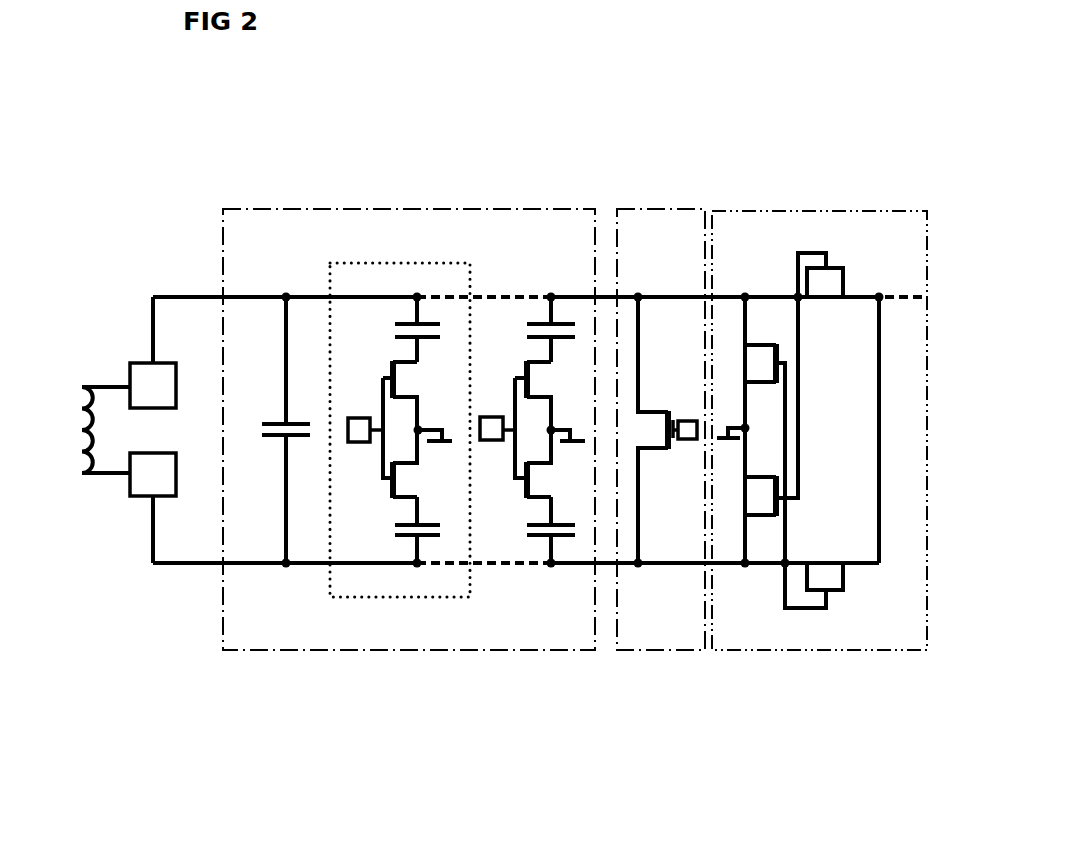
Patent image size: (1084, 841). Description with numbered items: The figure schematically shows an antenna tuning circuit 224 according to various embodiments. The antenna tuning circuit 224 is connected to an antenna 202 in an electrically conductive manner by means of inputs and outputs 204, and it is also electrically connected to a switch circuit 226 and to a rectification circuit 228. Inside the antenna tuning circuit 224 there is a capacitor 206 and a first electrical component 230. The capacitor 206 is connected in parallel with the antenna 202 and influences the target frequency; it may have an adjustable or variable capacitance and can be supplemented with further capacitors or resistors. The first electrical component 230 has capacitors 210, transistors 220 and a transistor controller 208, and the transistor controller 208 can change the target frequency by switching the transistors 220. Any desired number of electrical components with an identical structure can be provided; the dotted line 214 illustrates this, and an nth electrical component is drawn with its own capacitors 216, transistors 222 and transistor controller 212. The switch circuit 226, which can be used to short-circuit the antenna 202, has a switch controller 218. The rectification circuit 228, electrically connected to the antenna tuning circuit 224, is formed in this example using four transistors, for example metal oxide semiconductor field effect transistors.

The antenna 202 is at (87, 387).
The inputs and outputs 204 is at (143, 463).
The capacitor 206 is at (275, 415).
The transistor controller 208 is at (358, 430).
The capacitors 210 is at (432, 518).
The transistor controller 212 is at (483, 432).
The dotted line 214 is at (498, 297).
The capacitors 216 is at (550, 520).
The switch controller 218 is at (673, 416).
The transistors 220 is at (393, 470).
The transistors 222 is at (527, 478).
The antenna tuning circuit 224 is at (561, 650).
The switch circuit 226 is at (668, 650).
The rectification circuit 228 is at (816, 650).
The first electrical component 230 is at (330, 597).